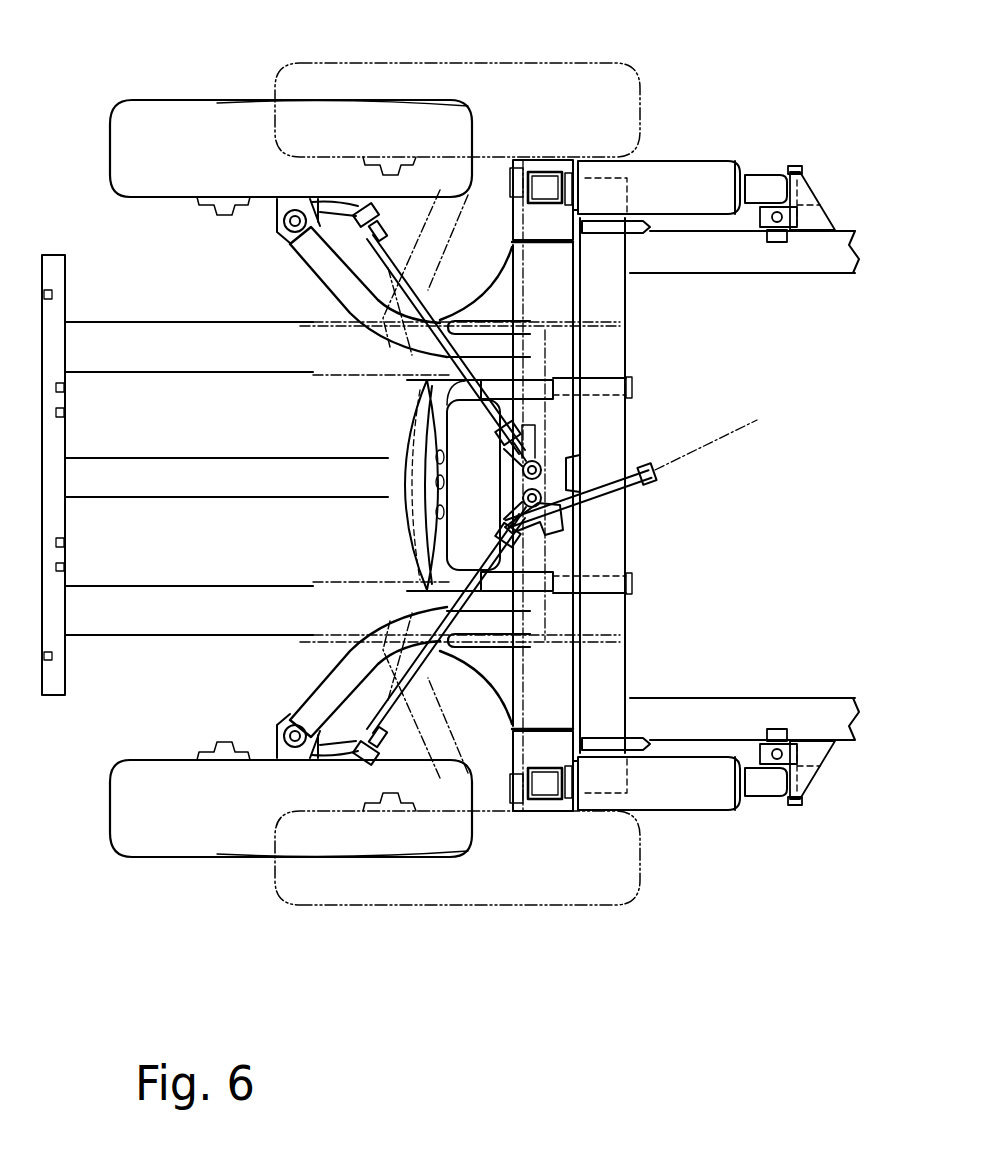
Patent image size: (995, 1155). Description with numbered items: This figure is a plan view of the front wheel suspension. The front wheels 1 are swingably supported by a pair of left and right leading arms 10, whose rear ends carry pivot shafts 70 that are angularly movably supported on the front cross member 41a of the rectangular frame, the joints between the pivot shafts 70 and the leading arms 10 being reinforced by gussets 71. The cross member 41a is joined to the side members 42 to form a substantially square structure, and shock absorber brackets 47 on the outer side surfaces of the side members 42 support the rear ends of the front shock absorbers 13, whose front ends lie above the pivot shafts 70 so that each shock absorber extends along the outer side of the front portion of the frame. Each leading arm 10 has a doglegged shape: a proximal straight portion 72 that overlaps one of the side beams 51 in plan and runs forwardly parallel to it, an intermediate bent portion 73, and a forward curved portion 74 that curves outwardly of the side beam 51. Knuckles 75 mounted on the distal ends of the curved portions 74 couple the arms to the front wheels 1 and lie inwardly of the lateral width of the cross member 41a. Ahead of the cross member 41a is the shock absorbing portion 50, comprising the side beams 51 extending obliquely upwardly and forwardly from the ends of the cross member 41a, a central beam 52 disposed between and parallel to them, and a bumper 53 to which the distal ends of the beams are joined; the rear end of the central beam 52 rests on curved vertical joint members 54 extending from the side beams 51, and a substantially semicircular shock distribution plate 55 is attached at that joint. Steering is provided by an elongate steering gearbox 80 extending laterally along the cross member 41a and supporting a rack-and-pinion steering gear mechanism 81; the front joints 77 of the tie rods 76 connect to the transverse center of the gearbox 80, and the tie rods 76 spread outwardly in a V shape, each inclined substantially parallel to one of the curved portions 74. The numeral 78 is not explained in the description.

The front wheels 1 is at (120, 103).
The leading arms 10 is at (303, 267).
The front shock absorbers 13 is at (697, 163).
The front cross member 41a is at (630, 670).
The side members 42 is at (712, 275).
The shock absorber brackets 47 is at (825, 205).
The shock absorbing portion 50 is at (96, 712).
The side beams 51 is at (157, 368).
The central beam 52 is at (134, 497).
The bumper 53 is at (65, 440).
The joint members 54 is at (385, 462).
The shock distribution plate 55 is at (443, 471).
The pivot shafts 70 is at (527, 745).
The gussets 71 is at (482, 660).
The straight portions 72 is at (400, 606).
The bent portions 73 is at (400, 622).
The curved portions 74 is at (340, 648).
The knuckles 75 is at (287, 728).
The tie rods 76 is at (448, 735).
The front joints 77 is at (410, 748).
The pivot 78 is at (520, 497).
The steering gearbox 80 is at (565, 418).
The rack-and-pinion steering gear mechanism 81 is at (562, 553).